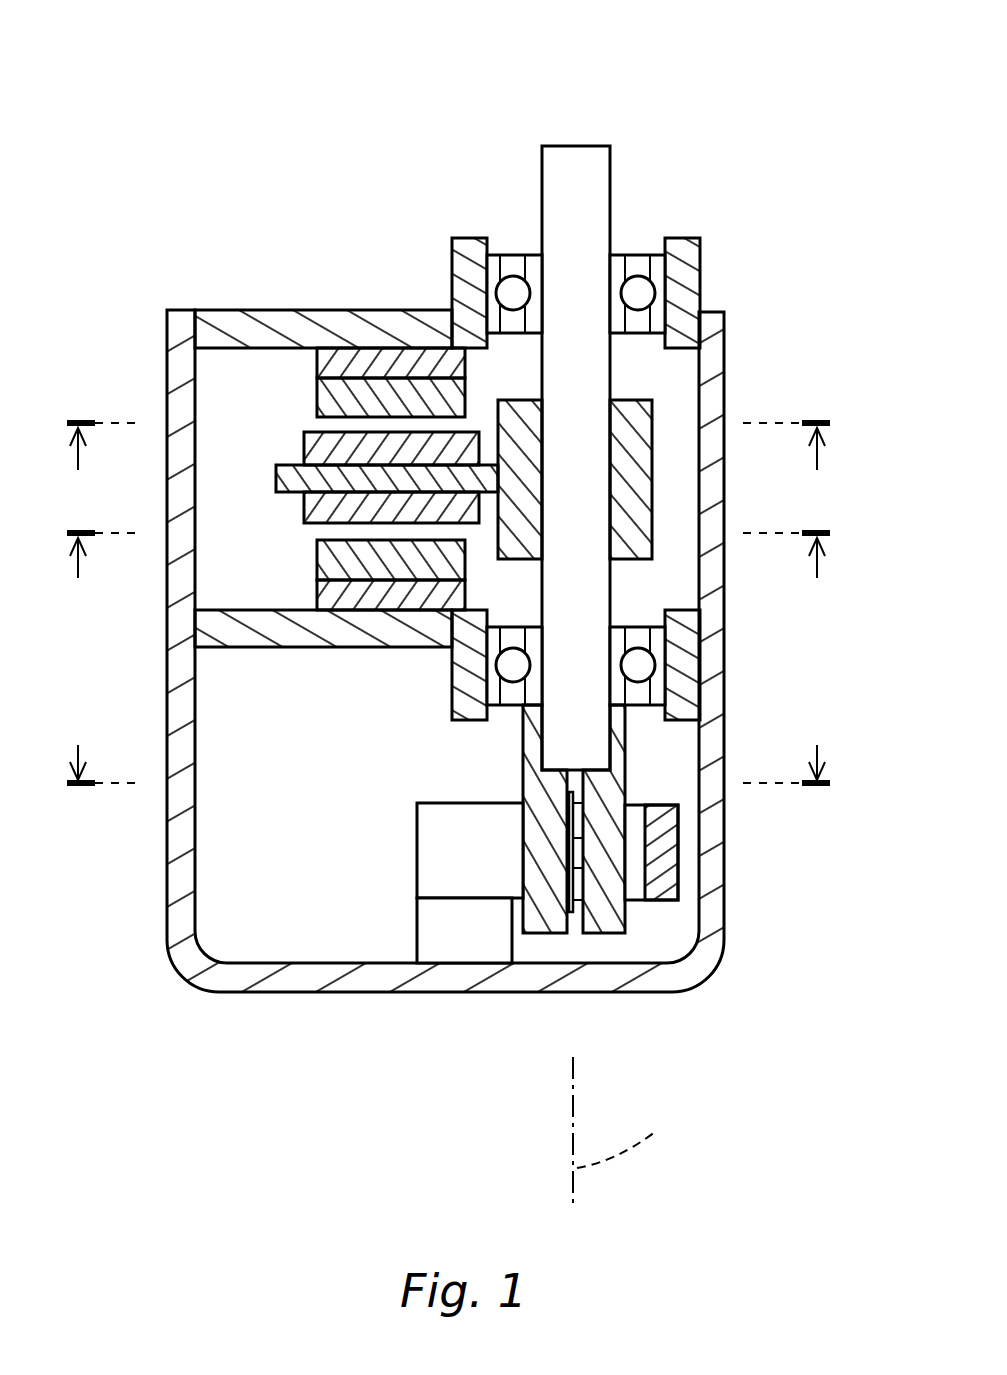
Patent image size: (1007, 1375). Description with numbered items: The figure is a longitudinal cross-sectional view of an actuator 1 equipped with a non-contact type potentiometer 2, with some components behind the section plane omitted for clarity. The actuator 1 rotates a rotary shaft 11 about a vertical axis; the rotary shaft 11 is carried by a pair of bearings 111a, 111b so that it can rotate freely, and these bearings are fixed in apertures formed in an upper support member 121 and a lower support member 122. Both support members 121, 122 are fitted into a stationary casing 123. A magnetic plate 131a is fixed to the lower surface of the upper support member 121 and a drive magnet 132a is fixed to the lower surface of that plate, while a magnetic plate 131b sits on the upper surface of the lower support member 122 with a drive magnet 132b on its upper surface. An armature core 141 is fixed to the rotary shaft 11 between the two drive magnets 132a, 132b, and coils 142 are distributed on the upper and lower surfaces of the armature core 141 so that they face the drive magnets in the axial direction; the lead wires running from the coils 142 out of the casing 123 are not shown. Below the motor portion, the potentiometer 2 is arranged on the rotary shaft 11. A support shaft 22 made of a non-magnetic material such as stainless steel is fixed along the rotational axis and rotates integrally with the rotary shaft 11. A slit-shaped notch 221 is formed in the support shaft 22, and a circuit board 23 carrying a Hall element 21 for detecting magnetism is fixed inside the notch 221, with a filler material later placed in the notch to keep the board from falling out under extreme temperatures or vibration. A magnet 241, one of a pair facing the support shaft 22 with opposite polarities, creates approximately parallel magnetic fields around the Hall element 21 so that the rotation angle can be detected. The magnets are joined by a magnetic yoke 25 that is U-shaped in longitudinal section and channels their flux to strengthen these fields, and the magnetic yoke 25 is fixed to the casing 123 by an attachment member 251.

The actuator 1 is at (220, 22).
The rotary shaft 11 is at (613, 213).
The bearing 111a is at (512, 253).
The bearing 111b is at (517, 705).
The upper support member 121 is at (312, 310).
The lower support member 122 is at (337, 648).
The stationary casing 123 is at (167, 893).
The magnetic plate 131a is at (310, 362).
The drive magnet 132a is at (317, 398).
The magnetic plate 131b is at (385, 600).
The drive magnet 132b is at (317, 563).
The armature core 141 is at (276, 478).
The coils 142 is at (304, 450).
The non-contact type potentiometer 2 is at (313, 888).
The Hall element 21 is at (575, 851).
The support shaft 22 is at (627, 920).
The notch 221 is at (582, 940).
The circuit board 23 is at (572, 913).
The magnet 241 is at (413, 850).
The magnetic yoke 25 is at (680, 865).
The attachment member 251 is at (412, 933).